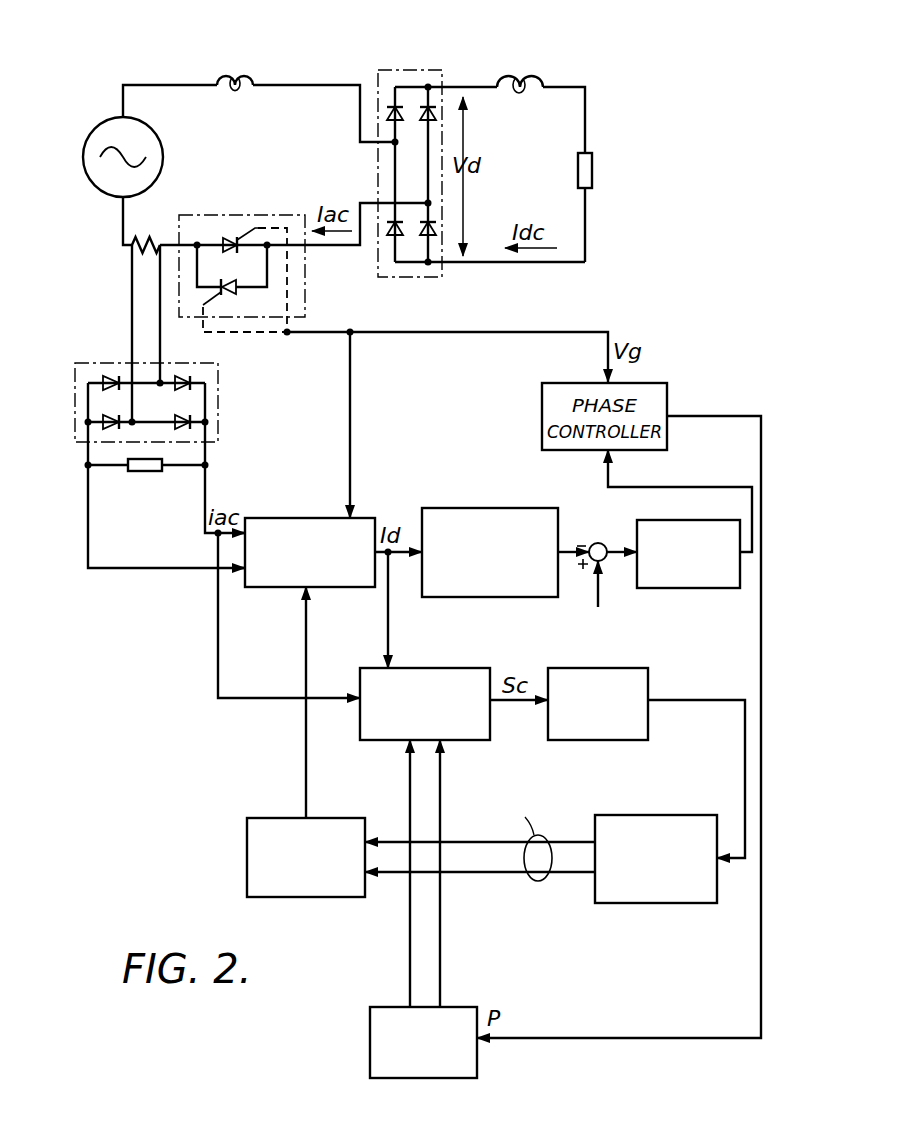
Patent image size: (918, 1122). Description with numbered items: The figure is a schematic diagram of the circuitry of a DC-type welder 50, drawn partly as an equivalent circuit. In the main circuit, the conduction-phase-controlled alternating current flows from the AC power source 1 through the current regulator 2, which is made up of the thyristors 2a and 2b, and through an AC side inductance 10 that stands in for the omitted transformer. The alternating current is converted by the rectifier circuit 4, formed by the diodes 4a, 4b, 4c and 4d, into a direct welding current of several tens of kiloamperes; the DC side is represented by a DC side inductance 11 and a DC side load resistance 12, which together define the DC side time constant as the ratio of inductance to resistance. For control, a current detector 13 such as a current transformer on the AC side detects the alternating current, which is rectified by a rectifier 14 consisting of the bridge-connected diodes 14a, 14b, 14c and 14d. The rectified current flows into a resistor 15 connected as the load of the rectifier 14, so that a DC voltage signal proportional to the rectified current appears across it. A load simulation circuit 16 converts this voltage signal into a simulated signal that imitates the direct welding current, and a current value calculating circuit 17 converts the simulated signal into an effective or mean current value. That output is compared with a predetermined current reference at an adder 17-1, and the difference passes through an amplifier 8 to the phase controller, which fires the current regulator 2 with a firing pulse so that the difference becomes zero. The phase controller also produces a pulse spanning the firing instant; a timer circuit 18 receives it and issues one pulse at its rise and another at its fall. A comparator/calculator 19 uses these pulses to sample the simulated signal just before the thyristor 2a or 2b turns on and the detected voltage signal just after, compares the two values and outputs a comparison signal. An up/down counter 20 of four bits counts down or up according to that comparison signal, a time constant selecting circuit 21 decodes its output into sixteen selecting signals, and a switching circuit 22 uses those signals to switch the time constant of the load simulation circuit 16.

The DC-type welder 50 is at (212, 59).
The AC power source 1 is at (156, 134).
The AC side inductance 10 is at (248, 78).
The current detector 13 is at (128, 242).
The current regulator 2 is at (262, 253).
The thyristor 2a is at (222, 243).
The thyristor 2b is at (237, 289).
The rectifier circuit 4 is at (461, 182).
The diode 4a is at (385, 113).
The diode 4b is at (436, 113).
The diode 4c is at (425, 240).
The diode 4d is at (385, 232).
The DC side inductance 11 is at (543, 80).
The DC side load resistance 12 is at (593, 173).
The rectifier 14 is at (164, 445).
The diode 14a is at (185, 378).
The diode 14b is at (186, 430).
The diode 14c is at (105, 380).
The diode 14d is at (111, 428).
The resistor 15 is at (147, 472).
The load simulation circuit 16 is at (278, 518).
The current value calculating circuit 17 is at (492, 508).
The adder 17-1 is at (598, 543).
The amplifier 8 is at (693, 588).
The comparator/calculator 19 is at (425, 668).
The up/down counter 20 is at (652, 683).
The time constant selecting circuit 21 is at (665, 815).
The switching circuit 22 is at (280, 818).
The timer circuit 18 is at (370, 1025).